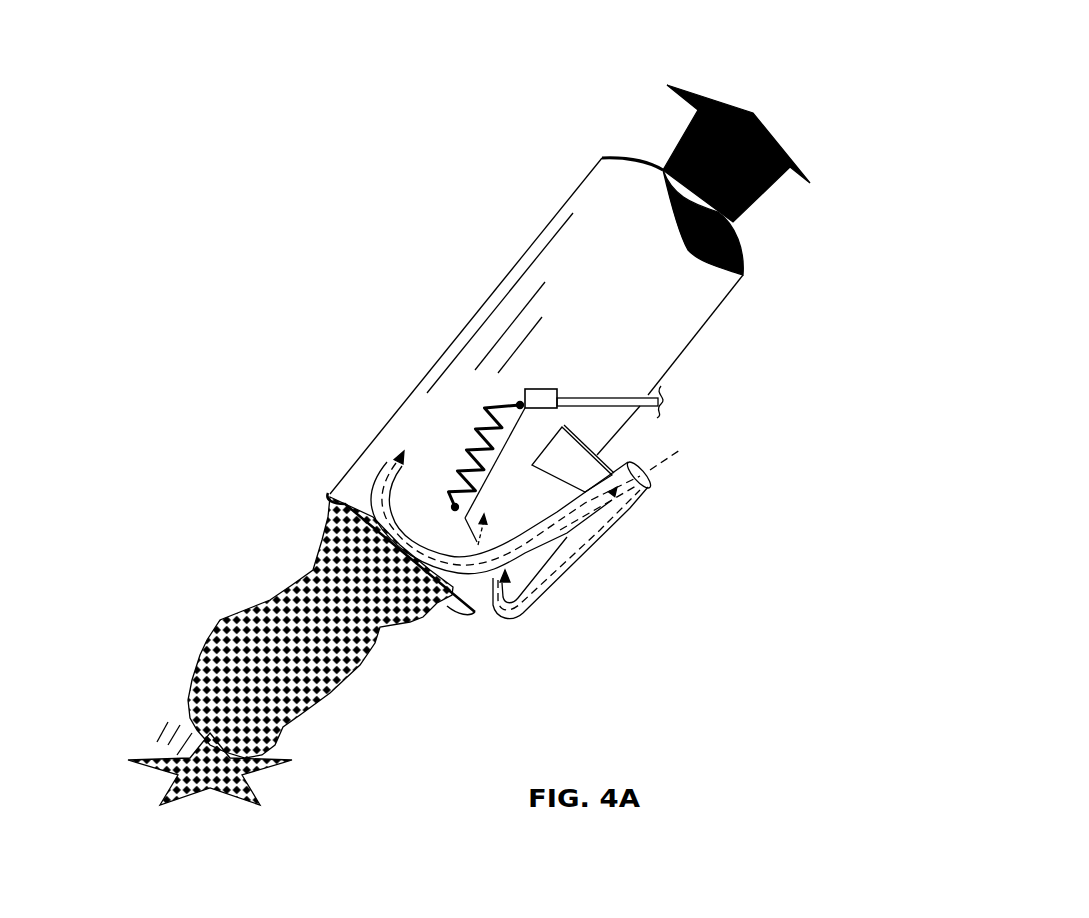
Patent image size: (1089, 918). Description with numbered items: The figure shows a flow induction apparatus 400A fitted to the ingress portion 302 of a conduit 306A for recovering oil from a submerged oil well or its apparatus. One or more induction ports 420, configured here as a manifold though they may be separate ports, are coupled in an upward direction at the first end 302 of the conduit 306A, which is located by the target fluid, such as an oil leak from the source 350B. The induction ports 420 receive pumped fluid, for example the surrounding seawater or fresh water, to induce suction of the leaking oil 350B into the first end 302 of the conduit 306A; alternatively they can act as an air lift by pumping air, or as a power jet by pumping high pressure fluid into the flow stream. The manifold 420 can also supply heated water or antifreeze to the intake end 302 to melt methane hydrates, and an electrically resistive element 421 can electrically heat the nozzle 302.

The flow induction apparatus 400A is at (568, 408).
The ingress portion 302 is at (368, 447).
The conduit 306A is at (540, 238).
The electrically resistive element 421 is at (473, 440).
The induction port 420 is at (630, 508).
The source 350B is at (130, 758).